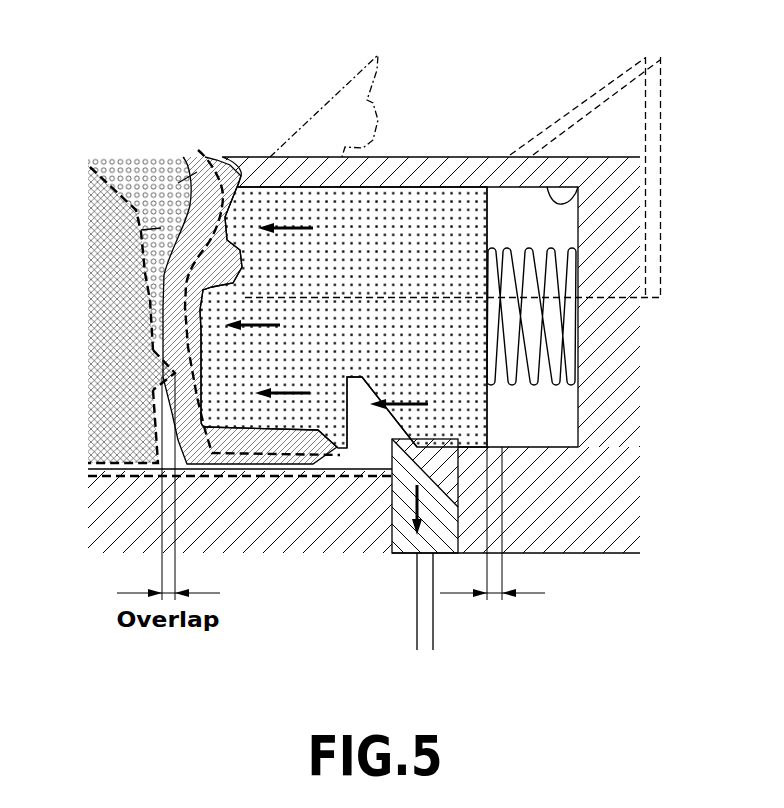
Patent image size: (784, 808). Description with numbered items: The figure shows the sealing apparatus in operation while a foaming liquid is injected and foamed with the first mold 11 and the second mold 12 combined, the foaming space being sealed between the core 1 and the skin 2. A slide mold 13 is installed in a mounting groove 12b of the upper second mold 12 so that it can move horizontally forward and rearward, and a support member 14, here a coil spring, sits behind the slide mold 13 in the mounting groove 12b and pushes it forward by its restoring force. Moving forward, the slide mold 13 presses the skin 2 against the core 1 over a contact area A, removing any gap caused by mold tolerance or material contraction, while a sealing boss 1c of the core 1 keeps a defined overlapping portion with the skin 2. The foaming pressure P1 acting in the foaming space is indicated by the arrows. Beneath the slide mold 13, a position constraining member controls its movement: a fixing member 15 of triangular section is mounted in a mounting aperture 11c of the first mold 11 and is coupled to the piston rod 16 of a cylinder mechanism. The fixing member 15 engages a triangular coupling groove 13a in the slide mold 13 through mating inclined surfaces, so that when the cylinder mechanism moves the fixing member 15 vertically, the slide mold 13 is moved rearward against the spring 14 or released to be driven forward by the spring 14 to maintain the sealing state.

The core 1 is at (110, 157).
The sealing boss 1c is at (176, 372).
The foaming pressure P1 is at (172, 187).
The skin 2 is at (198, 155).
The contact area A is at (332, 132).
The first mold 11 is at (558, 530).
The mounting aperture 11c is at (395, 538).
The second mold 12 is at (610, 175).
The mounting groove 12b is at (578, 190).
The slide mold 13 is at (433, 207).
The coupling groove 13a is at (346, 406).
The support member 14 is at (553, 255).
The fixing member 15 is at (398, 495).
The piston rod 16 is at (428, 604).